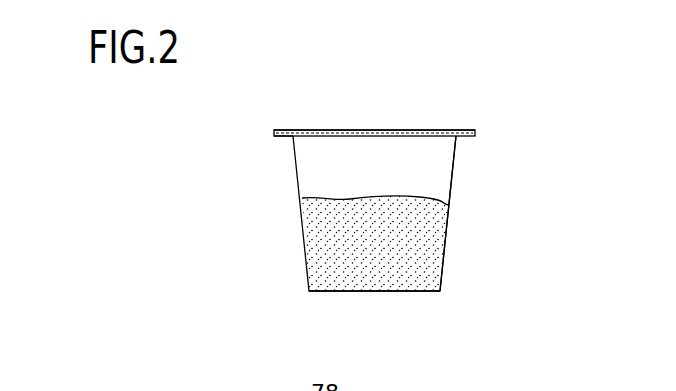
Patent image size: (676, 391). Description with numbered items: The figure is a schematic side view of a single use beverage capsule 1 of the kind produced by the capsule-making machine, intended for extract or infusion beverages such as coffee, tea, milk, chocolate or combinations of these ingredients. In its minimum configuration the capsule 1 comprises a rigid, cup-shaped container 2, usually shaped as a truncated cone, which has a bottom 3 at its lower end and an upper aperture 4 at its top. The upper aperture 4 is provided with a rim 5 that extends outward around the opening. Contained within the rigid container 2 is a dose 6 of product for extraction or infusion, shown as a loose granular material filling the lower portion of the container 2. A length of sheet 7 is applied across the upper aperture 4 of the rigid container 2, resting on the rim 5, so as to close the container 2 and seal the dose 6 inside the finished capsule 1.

The single use beverage capsule 1 is at (490, 218).
The rigid cup-shaped container 2 is at (456, 170).
The bottom 3 is at (367, 291).
The upper aperture 4 is at (405, 123).
The rim 5 is at (281, 136).
The dose of product 6 is at (352, 229).
The length of sheet 7 is at (301, 130).